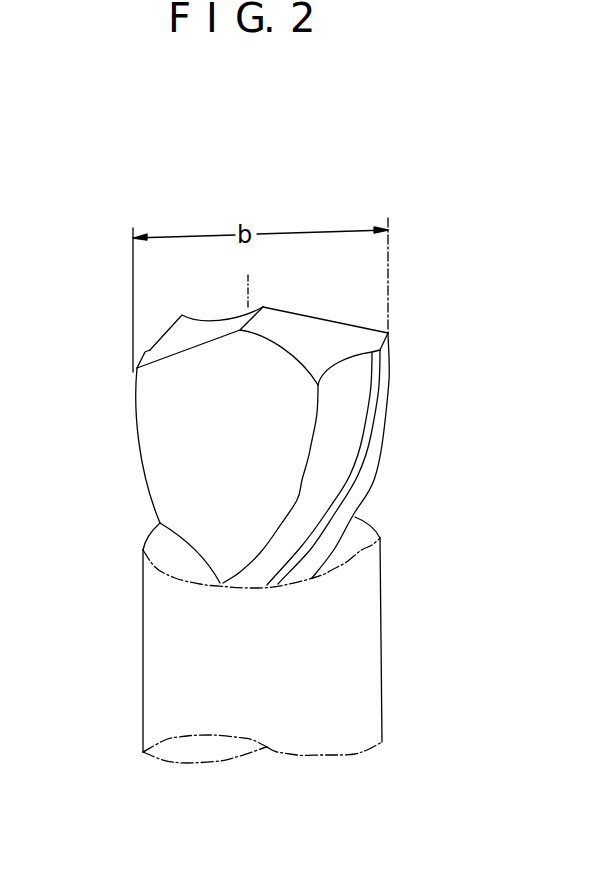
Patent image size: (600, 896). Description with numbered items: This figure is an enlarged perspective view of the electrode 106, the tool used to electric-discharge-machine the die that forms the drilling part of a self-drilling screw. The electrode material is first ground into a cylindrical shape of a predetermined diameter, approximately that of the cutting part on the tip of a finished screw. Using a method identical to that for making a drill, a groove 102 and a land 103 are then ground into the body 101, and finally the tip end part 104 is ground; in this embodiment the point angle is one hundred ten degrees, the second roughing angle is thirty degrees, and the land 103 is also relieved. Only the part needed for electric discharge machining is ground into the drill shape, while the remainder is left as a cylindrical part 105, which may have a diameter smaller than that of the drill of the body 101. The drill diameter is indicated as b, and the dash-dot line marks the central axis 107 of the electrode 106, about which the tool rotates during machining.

The body 101 is at (137, 441).
The groove 102 is at (223, 438).
The land 103 is at (343, 430).
The tip end part 104 is at (310, 335).
The cylindrical part 105 is at (383, 637).
The electrode 106 is at (383, 480).
The central axis 107 is at (248, 280).